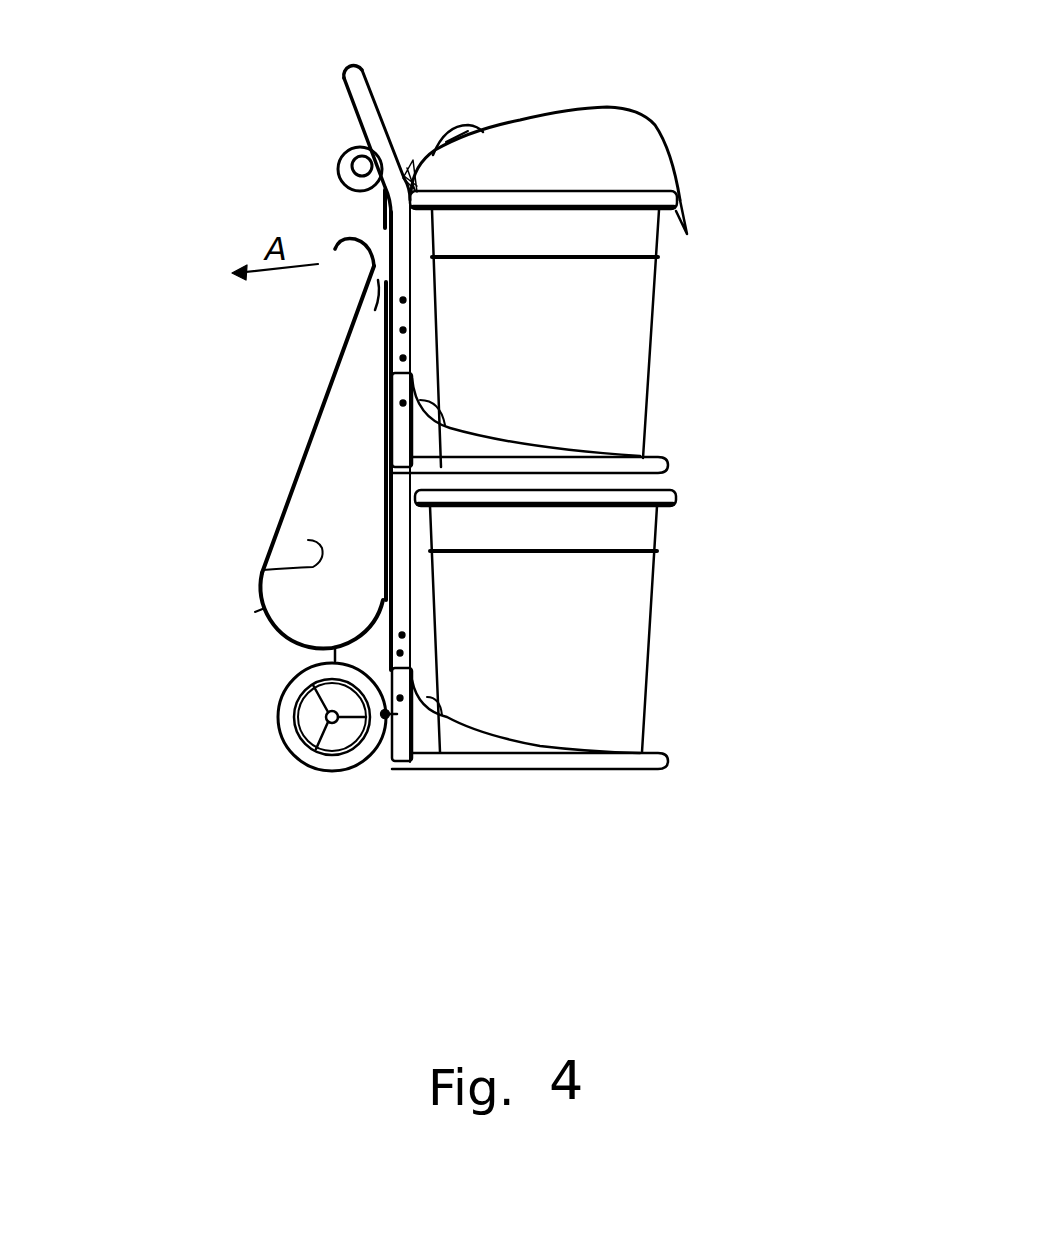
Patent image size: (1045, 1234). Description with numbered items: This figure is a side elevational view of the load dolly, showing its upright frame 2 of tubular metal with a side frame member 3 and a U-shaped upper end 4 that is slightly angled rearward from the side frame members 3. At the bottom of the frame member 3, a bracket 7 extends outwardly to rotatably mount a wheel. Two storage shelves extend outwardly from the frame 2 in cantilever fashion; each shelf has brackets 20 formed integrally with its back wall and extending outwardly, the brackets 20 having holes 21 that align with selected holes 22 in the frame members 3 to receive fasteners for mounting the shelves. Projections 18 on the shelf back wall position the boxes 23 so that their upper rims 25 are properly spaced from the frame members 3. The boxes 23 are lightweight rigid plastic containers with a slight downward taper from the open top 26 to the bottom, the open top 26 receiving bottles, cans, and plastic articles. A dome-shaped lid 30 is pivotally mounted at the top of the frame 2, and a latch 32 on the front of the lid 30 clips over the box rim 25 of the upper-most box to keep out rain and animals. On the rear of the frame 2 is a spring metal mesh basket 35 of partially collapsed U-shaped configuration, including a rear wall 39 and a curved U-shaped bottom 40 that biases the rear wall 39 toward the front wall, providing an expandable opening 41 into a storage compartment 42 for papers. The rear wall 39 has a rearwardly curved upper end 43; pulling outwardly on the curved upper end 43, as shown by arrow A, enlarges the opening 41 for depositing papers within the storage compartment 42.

The upright frame 2 is at (345, 83).
The side frame member 3 is at (415, 565).
The U-shaped upper end 4 is at (368, 102).
The bracket 7 is at (388, 748).
The projection 18 is at (470, 735).
The bracket 20 is at (413, 748).
The hole 21 is at (406, 673).
The hole 22 is at (322, 650).
The box 23 is at (627, 356).
The upper rim 25 is at (644, 190).
The open top 26 is at (633, 483).
The lid 30 is at (652, 124).
The latch 32 is at (689, 212).
The basket 35 is at (313, 428).
The rear wall 39 is at (292, 492).
The curved U-shaped bottom 40 is at (280, 630).
The expandable opening 41 is at (375, 305).
The storage compartment 42 is at (262, 570).
The rearwardly curved upper end 43 is at (339, 243).